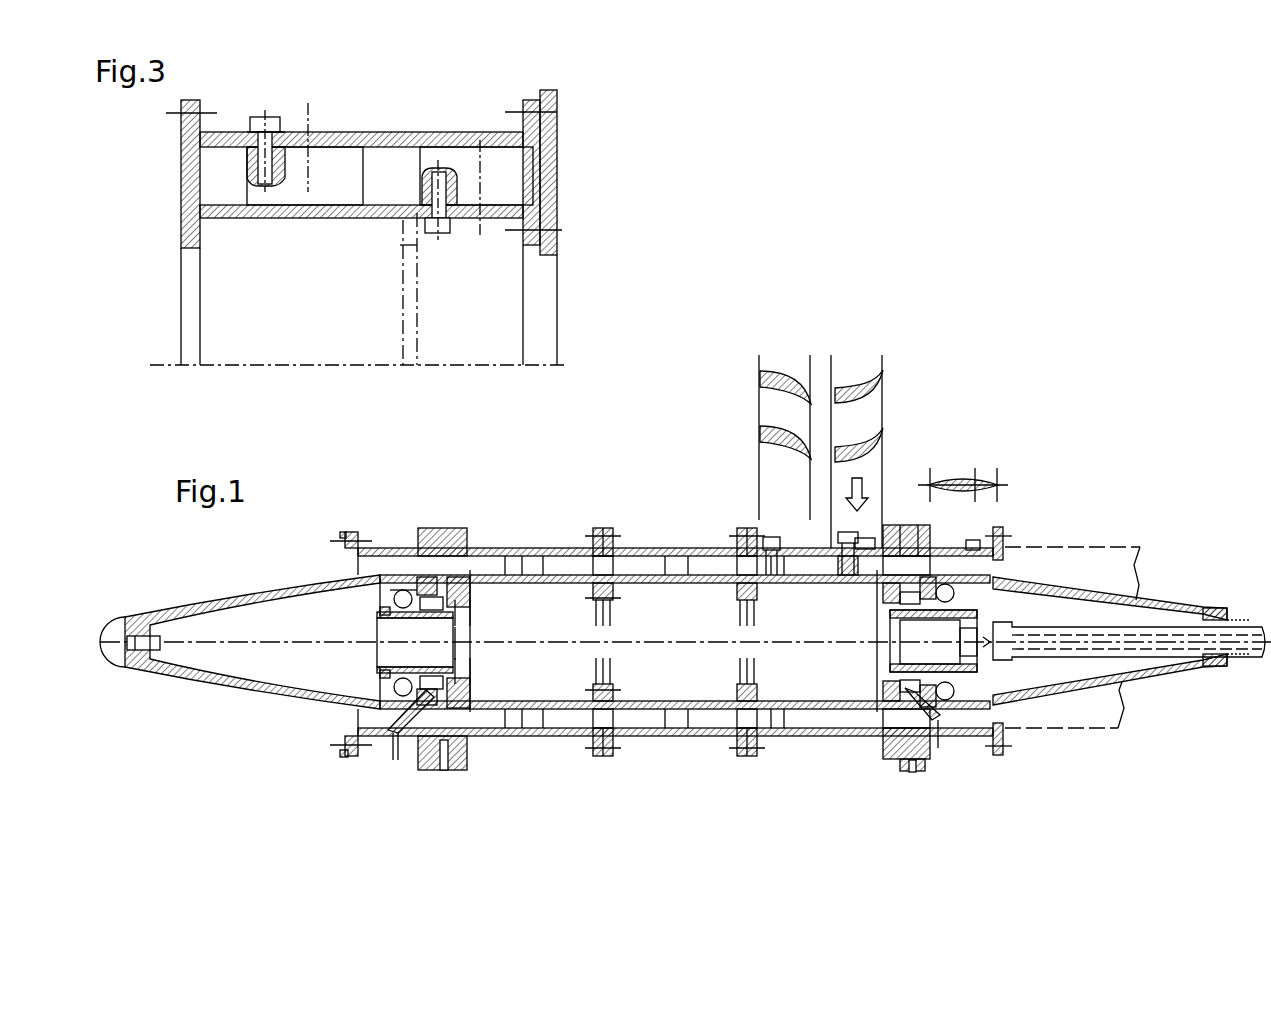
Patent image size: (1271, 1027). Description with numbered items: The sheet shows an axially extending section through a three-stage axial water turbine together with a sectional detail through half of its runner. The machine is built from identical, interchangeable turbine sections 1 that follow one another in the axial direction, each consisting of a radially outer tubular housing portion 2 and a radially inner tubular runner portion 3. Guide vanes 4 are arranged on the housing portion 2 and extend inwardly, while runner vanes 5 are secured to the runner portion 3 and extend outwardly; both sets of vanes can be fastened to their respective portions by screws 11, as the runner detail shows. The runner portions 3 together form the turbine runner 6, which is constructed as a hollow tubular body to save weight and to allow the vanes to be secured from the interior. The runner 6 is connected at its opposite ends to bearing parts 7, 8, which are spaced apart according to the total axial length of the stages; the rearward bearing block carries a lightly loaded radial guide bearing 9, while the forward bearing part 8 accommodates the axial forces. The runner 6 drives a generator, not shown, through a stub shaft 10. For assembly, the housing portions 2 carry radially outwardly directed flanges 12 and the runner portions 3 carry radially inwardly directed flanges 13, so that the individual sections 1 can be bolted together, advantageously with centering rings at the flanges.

In FIG. 1, the turbine section 1 is at (783, 532).
In FIG. 3, the housing portion 2 is at (398, 134).
In FIG. 1, the housing portion 2 is at (534, 737).
In FIG. 3, the runner portion 3 is at (374, 212).
In FIG. 1, the runner portion 3 is at (571, 710).
In FIG. 3, the guide vanes 4 is at (334, 165).
In FIG. 1, the guide vanes 4 is at (760, 379).
In FIG. 3, the runner vanes 5 is at (501, 160).
In FIG. 1, the runner vanes 5 is at (876, 430).
In FIG. 1, the turbine runner 6 is at (513, 613).
In FIG. 1, the bearing part 7 is at (420, 590).
In FIG. 1, the forward bearing part 8 is at (952, 546).
In FIG. 1, the radial guide bearing 9 is at (350, 582).
In FIG. 1, the stub shaft 10 is at (1142, 633).
In FIG. 3, the screws 11 is at (263, 165).
In FIG. 1, the screws 11 is at (855, 547).
In FIG. 1, the flanges 12 is at (594, 531).
In FIG. 1, the flanges 13 is at (570, 613).